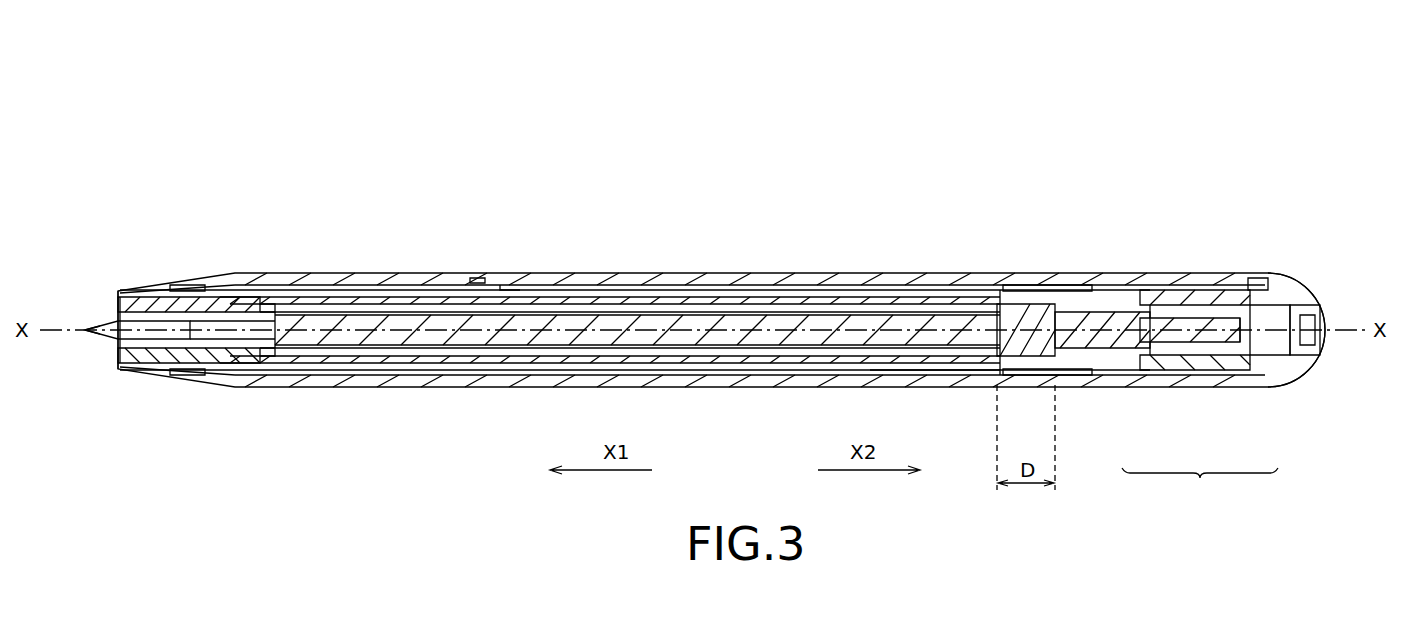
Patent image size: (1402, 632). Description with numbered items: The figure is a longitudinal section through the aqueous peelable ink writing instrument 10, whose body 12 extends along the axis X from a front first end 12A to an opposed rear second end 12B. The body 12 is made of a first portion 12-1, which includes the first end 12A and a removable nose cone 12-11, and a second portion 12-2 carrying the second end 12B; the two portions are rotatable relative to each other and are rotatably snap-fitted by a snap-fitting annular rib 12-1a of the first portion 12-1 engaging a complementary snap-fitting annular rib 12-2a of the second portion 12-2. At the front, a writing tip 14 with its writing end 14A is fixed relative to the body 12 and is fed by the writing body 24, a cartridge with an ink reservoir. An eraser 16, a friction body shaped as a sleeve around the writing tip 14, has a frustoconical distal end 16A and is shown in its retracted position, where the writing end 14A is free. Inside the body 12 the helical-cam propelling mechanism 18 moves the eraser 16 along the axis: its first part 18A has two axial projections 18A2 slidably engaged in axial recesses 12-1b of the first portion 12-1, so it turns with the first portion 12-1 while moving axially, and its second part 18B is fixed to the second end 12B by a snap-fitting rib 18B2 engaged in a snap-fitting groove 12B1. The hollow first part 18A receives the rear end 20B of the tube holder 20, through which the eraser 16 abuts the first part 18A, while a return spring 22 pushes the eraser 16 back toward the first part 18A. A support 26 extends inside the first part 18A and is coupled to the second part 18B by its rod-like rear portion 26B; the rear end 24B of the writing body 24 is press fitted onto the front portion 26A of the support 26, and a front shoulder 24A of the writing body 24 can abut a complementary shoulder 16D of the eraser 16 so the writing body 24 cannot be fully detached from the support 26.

The aqueous peelable ink writing instrument 10 is at (226, 76).
The body 12 is at (678, 143).
The first portion 12-1 is at (334, 252).
The second portion 12-2 is at (687, 252).
The snap-fitting annular rib 12-1a is at (500, 285).
The complementary snap-fitting annular rib 12-2a is at (485, 283).
The axial recess 12-1b is at (972, 375).
The first end 12A is at (123, 290).
The nose cone 12-11 is at (185, 284).
The second end 12B is at (1325, 300).
The snap-fitting groove 12B1 is at (1293, 284).
The writing tip 14 is at (105, 324).
The writing end 14A is at (95, 335).
The eraser 16 is at (250, 364).
The distal end 16A is at (125, 371).
The complementary shoulder 16D is at (260, 300).
The helical-cam propelling mechanism 18 is at (1200, 484).
The first part 18A is at (1235, 388).
The axial projection 18A2 is at (1033, 386).
The second part 18B is at (1178, 386).
The snap-fitting rib 18B2 is at (1255, 280).
The tube holder 20 is at (475, 385).
The rear end 20B is at (1115, 297).
The return spring 22 is at (192, 376).
The writing body 24 is at (560, 376).
The front shoulder 24A is at (276, 312).
The rear end 24B is at (1003, 285).
The support 26 is at (1100, 371).
The front portion 26A is at (1040, 304).
The rear portion 26B is at (1160, 305).